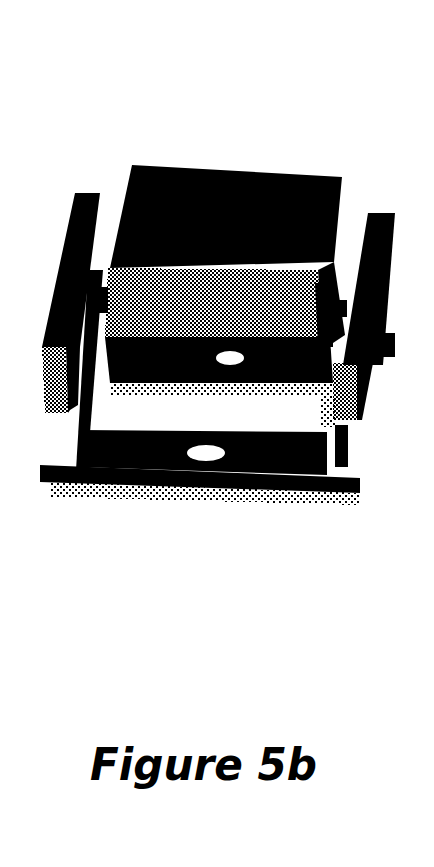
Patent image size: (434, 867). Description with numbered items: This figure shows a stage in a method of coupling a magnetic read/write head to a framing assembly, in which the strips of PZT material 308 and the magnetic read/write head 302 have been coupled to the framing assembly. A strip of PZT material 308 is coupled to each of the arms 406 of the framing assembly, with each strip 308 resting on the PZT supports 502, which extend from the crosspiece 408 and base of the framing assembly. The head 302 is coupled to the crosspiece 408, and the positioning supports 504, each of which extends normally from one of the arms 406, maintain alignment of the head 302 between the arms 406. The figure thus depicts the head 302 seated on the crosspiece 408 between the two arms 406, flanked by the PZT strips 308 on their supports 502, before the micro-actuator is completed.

The magnetic read/write head 302 is at (138, 160).
The strip of PZT material 308 is at (95, 184).
The positioning support 504 is at (347, 290).
The PZT support 502 is at (38, 488).
The arm 406 is at (58, 436).
The crosspiece 408 is at (152, 492).